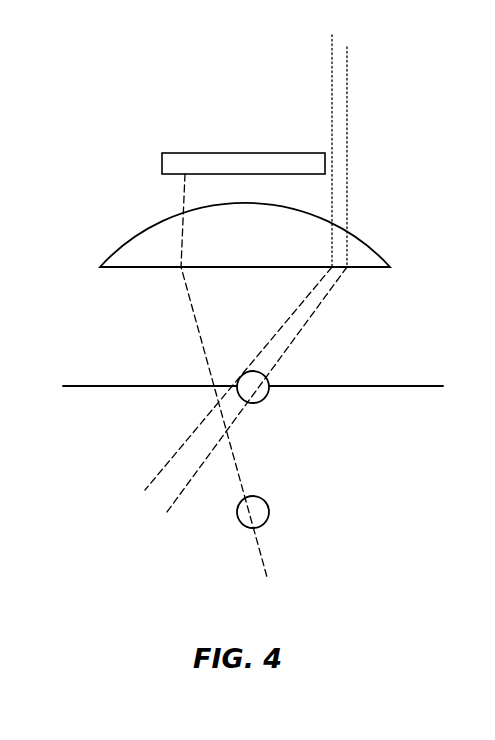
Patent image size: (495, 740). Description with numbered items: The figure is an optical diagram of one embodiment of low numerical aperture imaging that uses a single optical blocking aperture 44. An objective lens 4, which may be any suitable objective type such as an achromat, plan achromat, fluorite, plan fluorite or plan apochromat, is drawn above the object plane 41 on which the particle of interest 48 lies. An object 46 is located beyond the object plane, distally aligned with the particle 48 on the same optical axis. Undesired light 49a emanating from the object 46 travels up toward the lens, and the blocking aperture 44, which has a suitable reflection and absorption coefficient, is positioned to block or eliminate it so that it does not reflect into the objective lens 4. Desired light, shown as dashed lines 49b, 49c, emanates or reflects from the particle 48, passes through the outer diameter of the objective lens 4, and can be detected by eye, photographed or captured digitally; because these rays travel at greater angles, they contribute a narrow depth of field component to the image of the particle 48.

The objective lens 4 is at (372, 250).
The object plane 41 is at (408, 388).
The optical blocking aperture 44 is at (205, 152).
The object 46 is at (272, 518).
The particle of interest 48 is at (258, 403).
The undesired light 49a is at (200, 325).
The desired light 49b is at (330, 67).
The desired light 49c is at (350, 78).